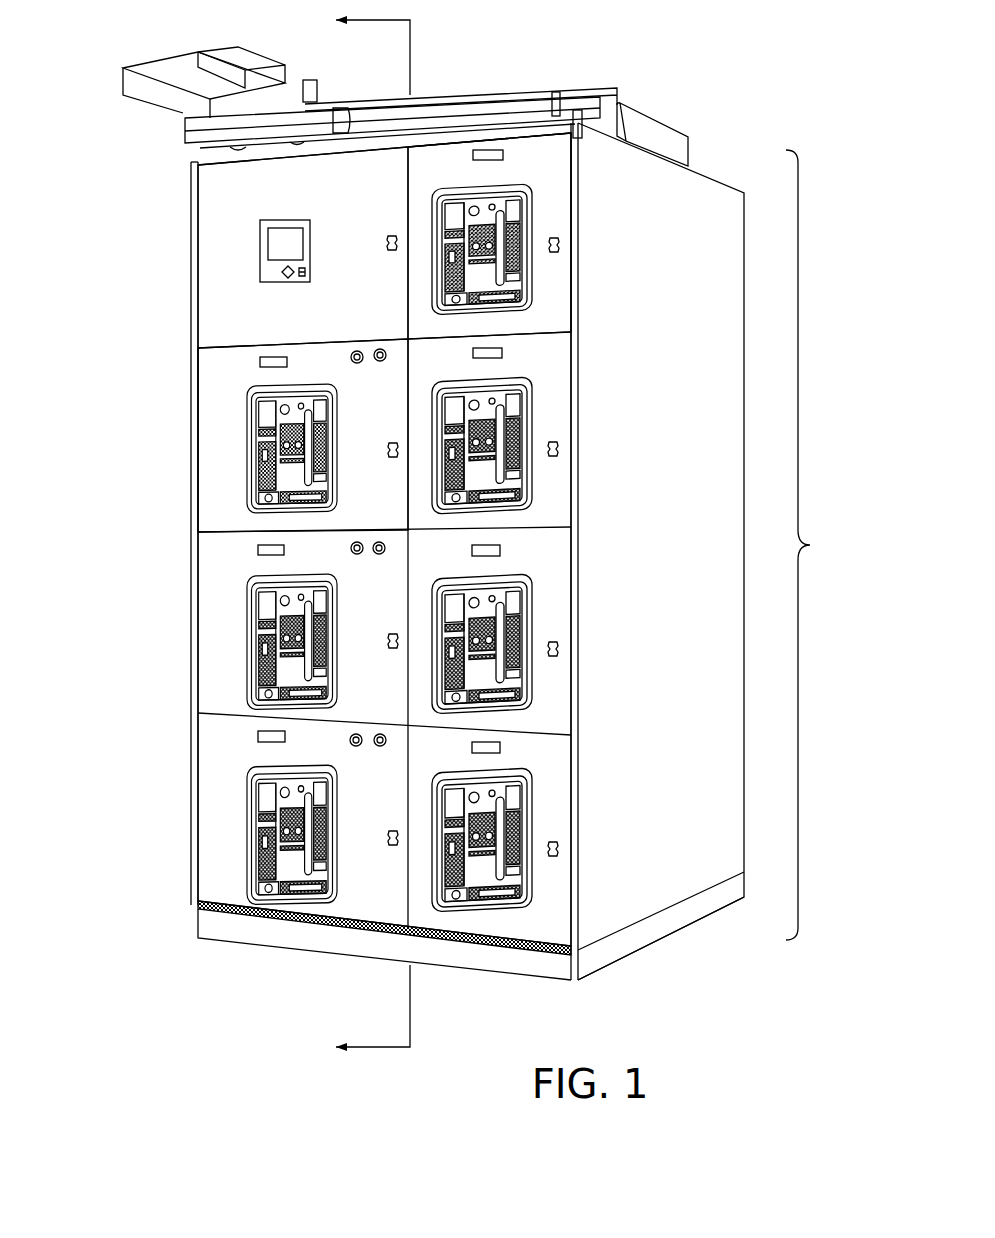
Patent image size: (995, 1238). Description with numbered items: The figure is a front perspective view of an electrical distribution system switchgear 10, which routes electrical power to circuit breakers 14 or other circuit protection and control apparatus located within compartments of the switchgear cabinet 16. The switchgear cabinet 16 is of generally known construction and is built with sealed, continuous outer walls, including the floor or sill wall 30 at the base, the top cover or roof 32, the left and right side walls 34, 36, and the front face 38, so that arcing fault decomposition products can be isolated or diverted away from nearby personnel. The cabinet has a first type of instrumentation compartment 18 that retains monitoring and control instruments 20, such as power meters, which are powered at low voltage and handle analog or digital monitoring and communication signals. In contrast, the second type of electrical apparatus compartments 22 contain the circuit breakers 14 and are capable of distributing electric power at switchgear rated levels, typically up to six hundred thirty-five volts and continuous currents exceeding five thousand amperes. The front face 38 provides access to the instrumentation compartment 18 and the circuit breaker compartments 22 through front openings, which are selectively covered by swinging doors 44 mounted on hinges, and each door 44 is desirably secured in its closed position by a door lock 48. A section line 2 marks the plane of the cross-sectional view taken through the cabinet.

The section line 2 is at (359, 534).
The electrical distribution system switchgear 10 is at (533, 539).
The circuit breaker 14 is at (243, 473).
The switchgear cabinet 16 is at (146, 412).
The instrumentation compartment 18 is at (216, 289).
The monitoring and control instrument 20 is at (278, 247).
The electrical apparatus compartment 22 is at (214, 457).
The floor or sill wall 30 is at (634, 952).
The top cover or roof 32 is at (722, 183).
The left side wall 34 is at (196, 348).
The right side wall 36 is at (688, 608).
The front face 38 is at (312, 912).
The swinging door 44 is at (359, 321).
The door lock 48 is at (392, 443).